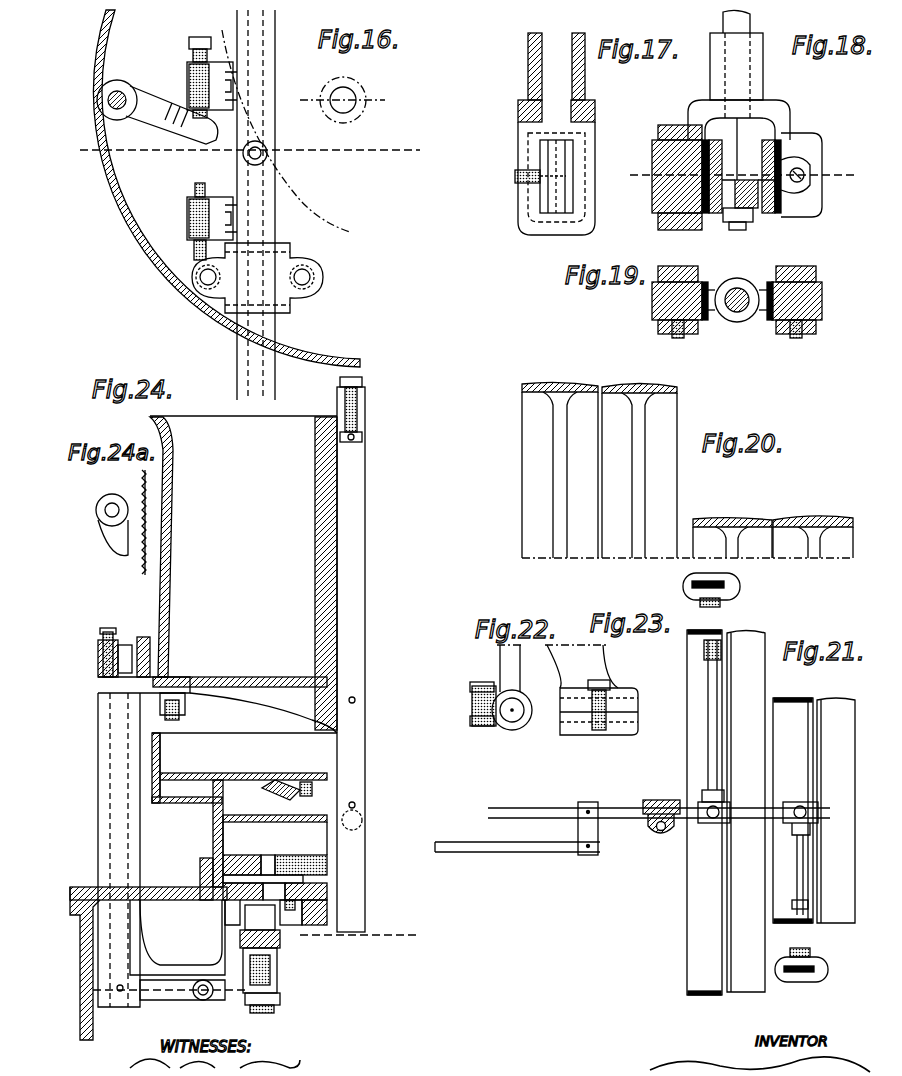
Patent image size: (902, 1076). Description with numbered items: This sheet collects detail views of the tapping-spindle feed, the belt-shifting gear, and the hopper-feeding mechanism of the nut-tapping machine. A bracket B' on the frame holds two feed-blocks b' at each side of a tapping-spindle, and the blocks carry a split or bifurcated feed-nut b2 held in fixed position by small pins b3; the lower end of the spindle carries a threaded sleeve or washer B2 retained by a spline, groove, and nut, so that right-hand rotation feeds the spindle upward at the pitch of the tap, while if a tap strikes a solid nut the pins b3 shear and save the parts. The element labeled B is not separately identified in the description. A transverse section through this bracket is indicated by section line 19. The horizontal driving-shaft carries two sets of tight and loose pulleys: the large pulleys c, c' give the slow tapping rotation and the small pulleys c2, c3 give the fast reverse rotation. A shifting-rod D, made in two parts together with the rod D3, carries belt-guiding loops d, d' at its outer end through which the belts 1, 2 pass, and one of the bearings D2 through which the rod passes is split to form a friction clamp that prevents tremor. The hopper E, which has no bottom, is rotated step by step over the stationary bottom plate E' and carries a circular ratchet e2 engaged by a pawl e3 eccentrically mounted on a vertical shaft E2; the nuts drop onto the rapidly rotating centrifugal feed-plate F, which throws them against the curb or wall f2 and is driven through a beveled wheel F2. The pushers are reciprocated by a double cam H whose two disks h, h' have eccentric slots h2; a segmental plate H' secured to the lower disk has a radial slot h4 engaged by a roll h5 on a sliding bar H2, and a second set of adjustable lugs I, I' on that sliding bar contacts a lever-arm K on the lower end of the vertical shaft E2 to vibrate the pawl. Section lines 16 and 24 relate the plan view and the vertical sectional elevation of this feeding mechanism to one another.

In FIG. 16, the vertical shaft E2 is at (120, 92).
In FIG. 24, the vertical shaft E2 is at (122, 775).
In FIG. 16, the adjustable lug I' is at (192, 77).
In FIG. 16, the adjustable lug I is at (186, 221).
In FIG. 16, the lever-arm K is at (148, 126).
In FIG. 24, the lever-arm K is at (172, 985).
In FIG. 16, the roll h5 is at (267, 158).
In FIG. 24, the roll h5 is at (244, 940).
In FIG. 16, the sliding bar H2 is at (272, 178).
In FIG. 24, the sliding bar H2 is at (264, 938).
In FIG. 16, the section line 24 is at (385, 147).
In FIG. 17, the bracket B' is at (539, 77).
In FIG. 18, the bracket B' is at (736, 64).
In FIG. 17, the feed-block b' is at (574, 182).
In FIG. 18, the feed-block b' is at (667, 183).
In FIG. 19, the feed-block b' is at (717, 302).
In FIG. 18, the yoke head B is at (757, 151).
In FIG. 18, the threaded sleeve or washer B2 is at (700, 196).
In FIG. 19, the threaded sleeve or washer B2 is at (737, 323).
In FIG. 19, the split feed-nut b2 is at (765, 282).
In FIG. 19, the pin b3 is at (735, 278).
In FIG. 18, the section line 19 is at (845, 118).
In FIG. 20, the large pulley c is at (560, 454).
In FIG. 21, the large pulley c is at (708, 812).
In FIG. 20, the large pulley c' is at (639, 454).
In FIG. 21, the large pulley c' is at (746, 812).
In FIG. 20, the small pulley c2 is at (740, 518).
In FIG. 21, the small pulley c2 is at (795, 810).
In FIG. 20, the small pulley c3 is at (826, 516).
In FIG. 21, the small pulley c3 is at (836, 810).
In FIG. 21, the belt-guiding loop d is at (732, 594).
In FIG. 21, the belt-guiding loop d' is at (821, 967).
In FIG. 21, the belt 1 is at (697, 636).
In FIG. 21, the belt 2 is at (800, 698).
In FIG. 21, the shifting-rod D is at (624, 820).
In FIG. 22, the bearing D2 is at (512, 730).
In FIG. 23, the bearing D2 is at (574, 722).
In FIG. 21, the rod D3 is at (537, 854).
In FIG. 24, the hopper E is at (243, 573).
In FIG. 24, the stationary bottom plate E' is at (217, 705).
In FIG. 24, the circular ratchet e2 is at (163, 525).
In FIG. 24, the pawl e3 is at (128, 640).
In FIG. 24A, the pawl e3 is at (121, 522).
In FIG. 24, the centrifugal feed-plate F is at (206, 773).
In FIG. 24, the curb or wall f2 is at (160, 760).
In FIG. 24, the beveled wheel F2 is at (270, 773).
In FIG. 24, the cam-disk h is at (241, 862).
In FIG. 24, the cam-disk h' is at (185, 877).
In FIG. 24, the eccentric slot h2 is at (272, 862).
In FIG. 24, the radial slot h4 is at (225, 917).
In FIG. 24, the double cam H is at (367, 654).
In FIG. 24, the segmental plate H' is at (378, 904).
In FIG. 24, the section line 16 is at (389, 893).